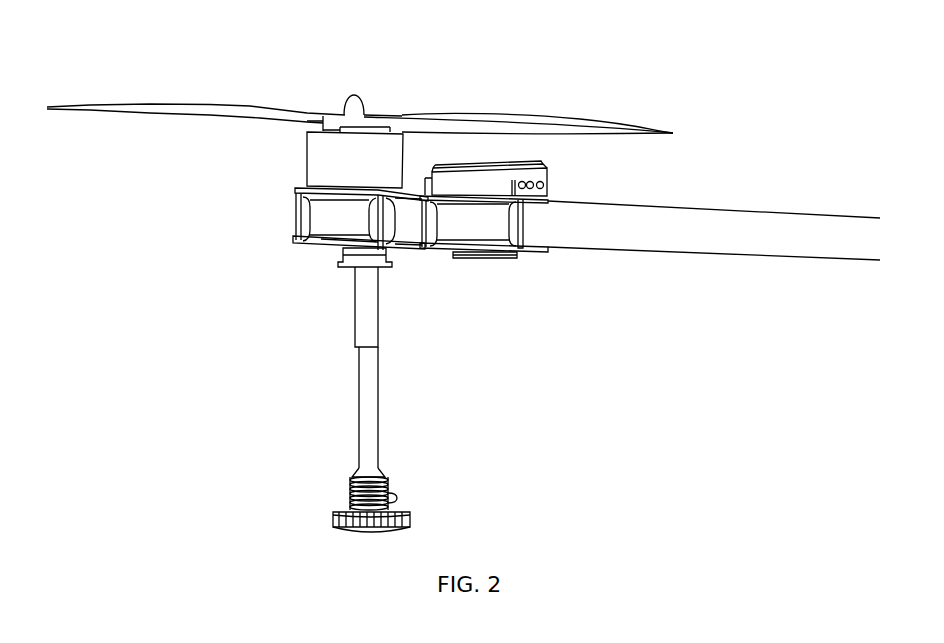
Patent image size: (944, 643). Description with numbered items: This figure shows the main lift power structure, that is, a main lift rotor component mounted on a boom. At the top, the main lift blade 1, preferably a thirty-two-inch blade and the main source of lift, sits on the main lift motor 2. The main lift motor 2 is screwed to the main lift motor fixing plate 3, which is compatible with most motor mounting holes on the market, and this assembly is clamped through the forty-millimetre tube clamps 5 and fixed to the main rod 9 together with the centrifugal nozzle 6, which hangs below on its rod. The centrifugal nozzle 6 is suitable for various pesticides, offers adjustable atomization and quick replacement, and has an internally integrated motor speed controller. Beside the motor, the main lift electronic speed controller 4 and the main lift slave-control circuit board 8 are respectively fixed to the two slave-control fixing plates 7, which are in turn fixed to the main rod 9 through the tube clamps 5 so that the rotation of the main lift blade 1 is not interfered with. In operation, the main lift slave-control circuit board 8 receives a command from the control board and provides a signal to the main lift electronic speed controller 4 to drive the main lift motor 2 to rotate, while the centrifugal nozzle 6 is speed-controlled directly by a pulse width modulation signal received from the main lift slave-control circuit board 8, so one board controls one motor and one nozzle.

The main lift blade 1 is at (383, 115).
The main lift motor 2 is at (385, 158).
The main lift motor fixing plate 3 is at (433, 170).
The main lift electronic speed controller 4 is at (550, 175).
The 40 mm tube clamp 5 is at (523, 227).
The centrifugal nozzle 6 is at (356, 268).
The slave-control fixing plate 7 is at (423, 247).
The main lift slave-control circuit board 8 is at (517, 255).
The main rod 9 is at (710, 235).